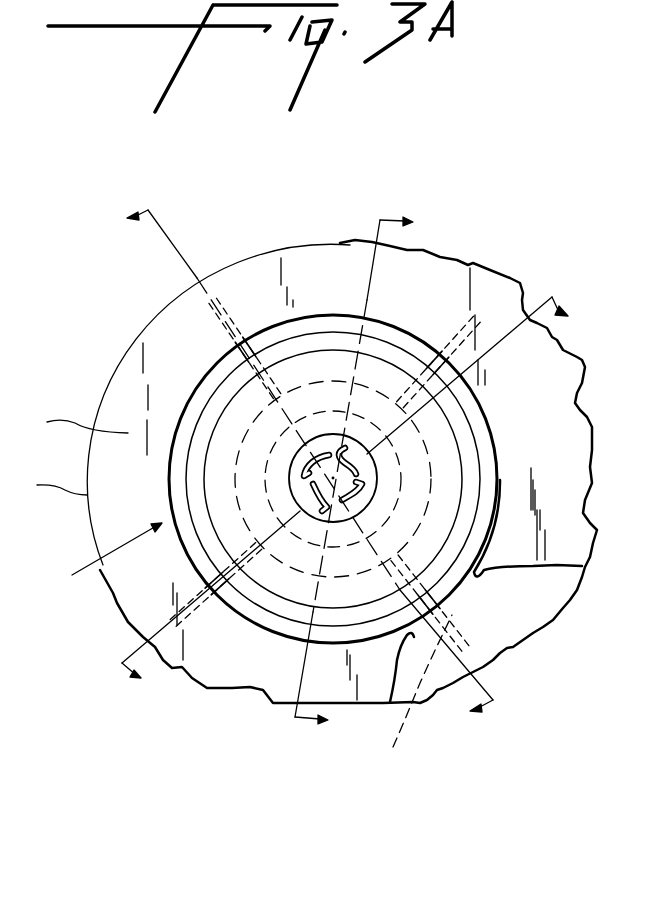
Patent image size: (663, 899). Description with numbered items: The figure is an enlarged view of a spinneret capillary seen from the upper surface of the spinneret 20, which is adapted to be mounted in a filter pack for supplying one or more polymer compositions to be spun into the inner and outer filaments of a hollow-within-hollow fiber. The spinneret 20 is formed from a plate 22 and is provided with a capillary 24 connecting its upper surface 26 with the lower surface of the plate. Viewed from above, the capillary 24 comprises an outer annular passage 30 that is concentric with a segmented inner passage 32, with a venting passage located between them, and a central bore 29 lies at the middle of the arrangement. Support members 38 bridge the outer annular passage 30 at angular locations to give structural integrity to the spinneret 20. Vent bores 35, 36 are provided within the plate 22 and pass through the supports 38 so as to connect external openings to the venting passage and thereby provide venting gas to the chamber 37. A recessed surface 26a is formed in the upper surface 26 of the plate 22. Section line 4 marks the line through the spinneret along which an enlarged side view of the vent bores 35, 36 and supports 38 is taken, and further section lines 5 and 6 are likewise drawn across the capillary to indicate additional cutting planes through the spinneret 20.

The spinneret 20 is at (90, 372).
The plate 22 is at (47, 488).
The capillary 24 is at (98, 557).
The upper surface 26 is at (71, 421).
The recessed surface 26a is at (488, 472).
The central bore 29 is at (300, 495).
The outer annular passage 30 is at (460, 428).
The segmented inner passage 32 is at (319, 510).
The vent bore 35 is at (413, 696).
The vent bore 36 is at (220, 323).
The chamber 37 is at (350, 368).
The support member 38 is at (262, 353).
The line 4— 4 is at (299, 469).
The section line 5- 5 is at (353, 500).
The section line 6- 6 is at (363, 473).